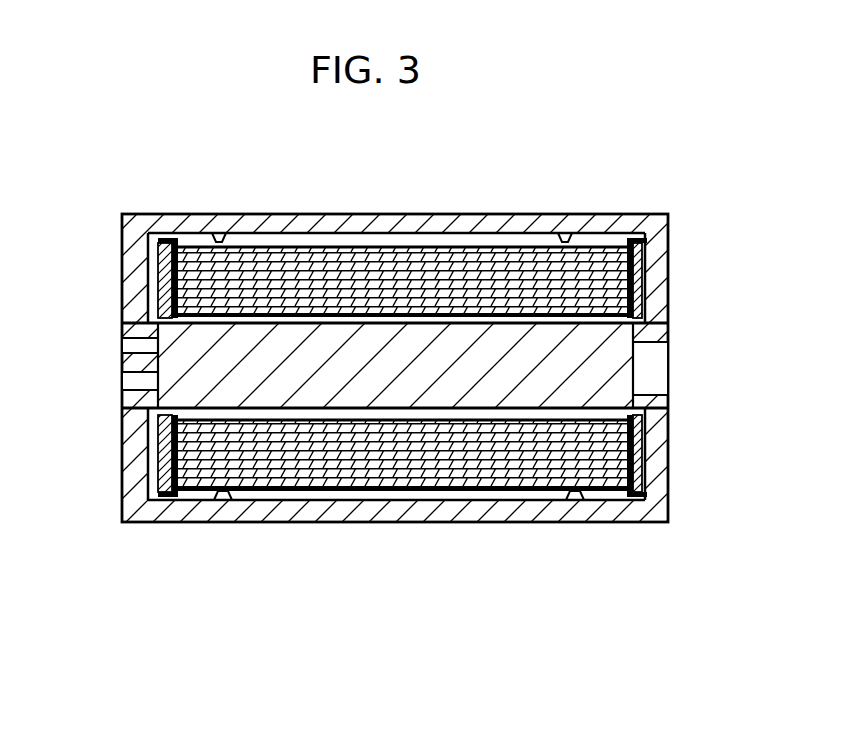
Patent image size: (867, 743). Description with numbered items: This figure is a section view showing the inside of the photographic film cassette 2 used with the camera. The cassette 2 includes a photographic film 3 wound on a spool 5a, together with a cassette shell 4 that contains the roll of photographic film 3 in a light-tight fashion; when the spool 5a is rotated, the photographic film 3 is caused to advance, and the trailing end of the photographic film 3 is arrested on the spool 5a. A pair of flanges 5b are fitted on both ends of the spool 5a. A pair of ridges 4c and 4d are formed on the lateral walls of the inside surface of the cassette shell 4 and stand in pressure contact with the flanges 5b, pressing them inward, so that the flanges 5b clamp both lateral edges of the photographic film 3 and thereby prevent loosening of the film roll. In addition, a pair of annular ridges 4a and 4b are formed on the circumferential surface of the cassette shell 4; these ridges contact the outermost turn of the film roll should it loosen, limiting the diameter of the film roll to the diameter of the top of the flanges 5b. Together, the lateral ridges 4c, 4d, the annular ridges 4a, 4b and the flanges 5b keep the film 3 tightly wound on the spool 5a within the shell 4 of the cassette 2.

The photographic film cassette 2 is at (344, 552).
The photographic film 3 is at (511, 492).
The cassette shell 4 is at (371, 214).
The annular ridge 4a is at (220, 242).
The annular ridge 4b is at (566, 242).
The ridge 4c is at (144, 247).
The ridge 4d is at (652, 240).
The spool 5a is at (662, 331).
The flanges 5b is at (158, 303).